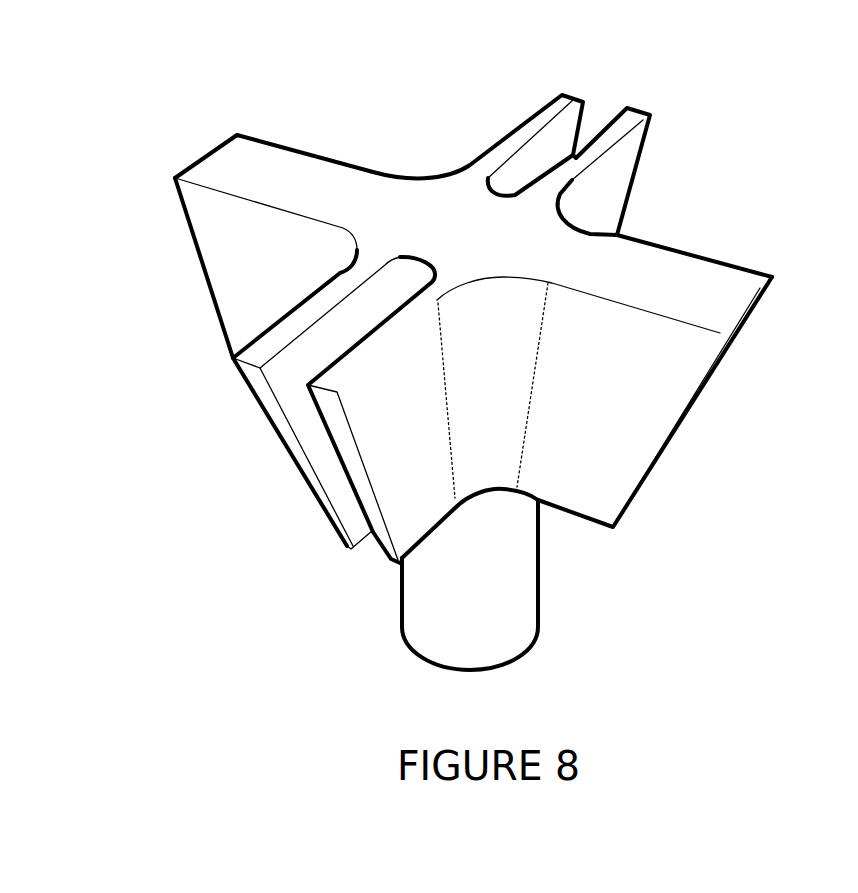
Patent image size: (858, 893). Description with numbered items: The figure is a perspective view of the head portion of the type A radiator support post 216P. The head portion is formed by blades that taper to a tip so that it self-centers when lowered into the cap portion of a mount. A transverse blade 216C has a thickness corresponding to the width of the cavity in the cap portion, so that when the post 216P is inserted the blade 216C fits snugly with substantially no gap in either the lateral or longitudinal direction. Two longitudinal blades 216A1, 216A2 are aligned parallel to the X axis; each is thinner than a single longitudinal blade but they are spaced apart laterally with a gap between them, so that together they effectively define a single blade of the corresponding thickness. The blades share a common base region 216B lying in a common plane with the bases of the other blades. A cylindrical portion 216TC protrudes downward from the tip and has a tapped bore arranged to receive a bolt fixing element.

The type A radiator support post 216P is at (752, 86).
The transverse blade base 216B is at (603, 143).
The second longitudinal blade 216A2 is at (277, 442).
The first longitudinal blade 216A1 is at (357, 482).
The transverse blade 216C is at (703, 380).
The cylindrical portion 216TC is at (540, 593).